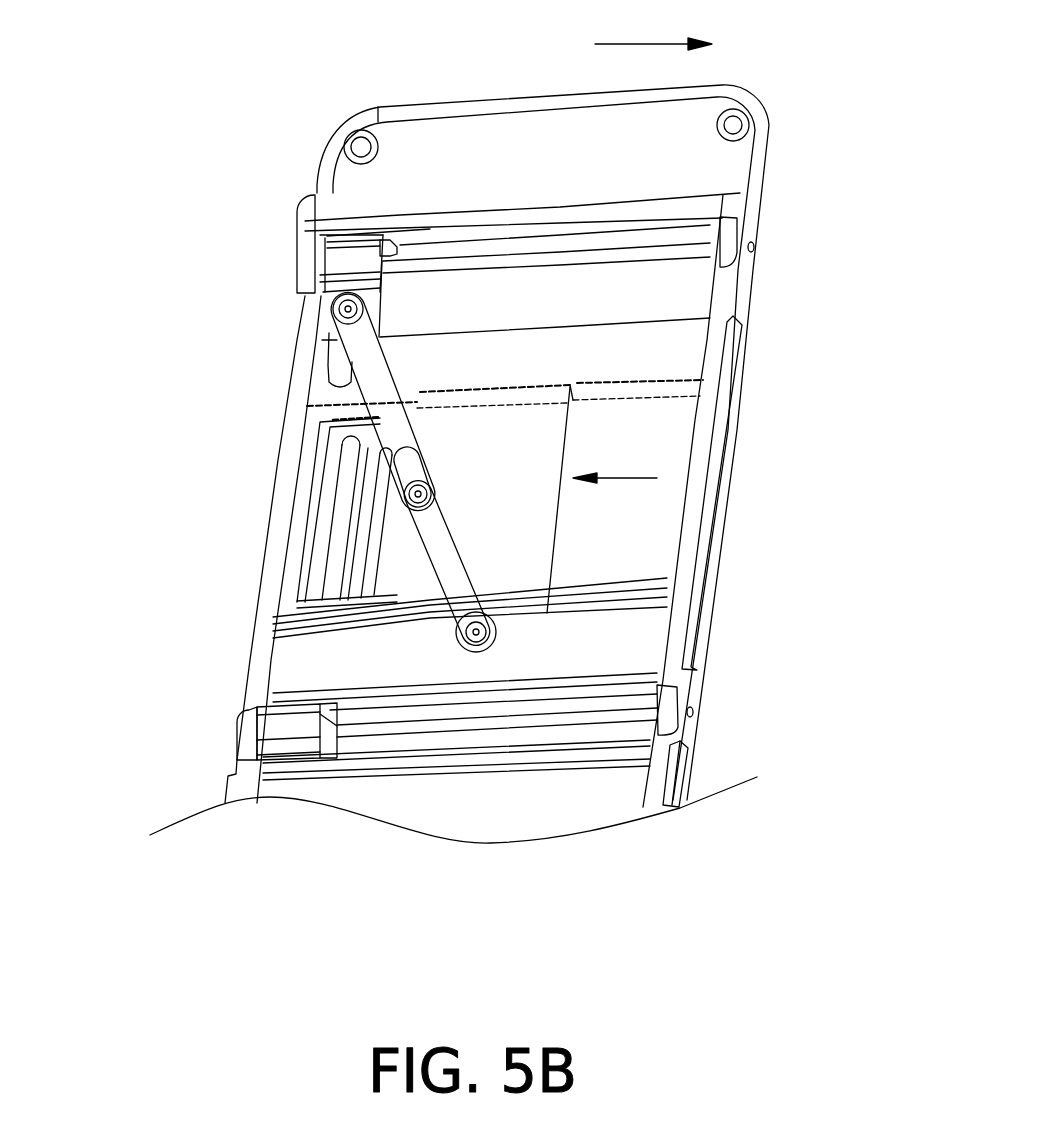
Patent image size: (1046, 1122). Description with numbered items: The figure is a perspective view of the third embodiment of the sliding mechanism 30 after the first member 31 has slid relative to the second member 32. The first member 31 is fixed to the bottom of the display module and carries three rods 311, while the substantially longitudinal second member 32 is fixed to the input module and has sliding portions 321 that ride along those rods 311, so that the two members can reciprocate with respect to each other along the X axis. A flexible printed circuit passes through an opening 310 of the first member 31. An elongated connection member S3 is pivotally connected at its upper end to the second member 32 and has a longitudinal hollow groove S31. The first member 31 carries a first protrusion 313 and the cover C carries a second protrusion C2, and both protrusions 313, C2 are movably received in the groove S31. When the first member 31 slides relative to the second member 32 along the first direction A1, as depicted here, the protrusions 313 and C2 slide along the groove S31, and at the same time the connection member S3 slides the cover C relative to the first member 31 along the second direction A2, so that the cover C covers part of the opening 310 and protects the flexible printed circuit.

The sliding mechanism 30 is at (55, 96).
The first member 31 is at (777, 110).
The rods 311 is at (648, 252).
The first protrusion 313 is at (482, 628).
The second member 32 is at (310, 519).
The sliding portions 321 is at (340, 259).
The opening 310 is at (375, 574).
The second protrusion C2 is at (402, 470).
The connection member S3 is at (367, 360).
The longitudinal hollow groove S31 is at (457, 583).
The cover C is at (530, 440).
The first direction A1 is at (653, 30).
The second direction A2 is at (615, 463).